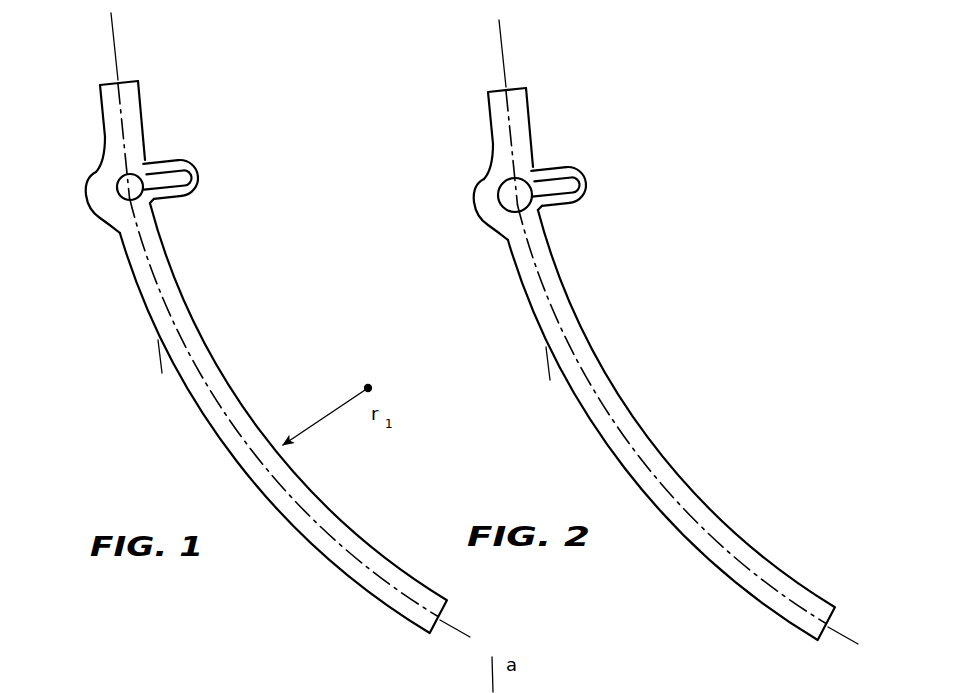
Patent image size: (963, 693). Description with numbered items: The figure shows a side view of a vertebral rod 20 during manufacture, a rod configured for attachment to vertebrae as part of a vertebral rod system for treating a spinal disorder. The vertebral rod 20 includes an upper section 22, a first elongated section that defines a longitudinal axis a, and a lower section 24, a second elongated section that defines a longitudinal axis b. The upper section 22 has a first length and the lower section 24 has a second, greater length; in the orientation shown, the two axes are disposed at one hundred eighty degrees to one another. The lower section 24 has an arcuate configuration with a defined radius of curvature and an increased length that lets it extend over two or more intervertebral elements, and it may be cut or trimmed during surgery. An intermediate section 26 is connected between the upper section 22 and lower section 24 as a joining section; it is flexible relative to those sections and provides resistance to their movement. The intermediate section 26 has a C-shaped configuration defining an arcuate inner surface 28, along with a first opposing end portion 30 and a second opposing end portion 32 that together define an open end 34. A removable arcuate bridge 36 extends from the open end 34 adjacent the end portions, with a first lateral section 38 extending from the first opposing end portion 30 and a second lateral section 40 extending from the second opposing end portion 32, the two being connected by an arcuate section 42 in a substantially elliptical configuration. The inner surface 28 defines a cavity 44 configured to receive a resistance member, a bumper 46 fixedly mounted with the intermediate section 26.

In FIG. 1, the vertebral rod 20 is at (99, 462).
In FIG. 2, the vertebral rod 20 is at (671, 328).
In FIG. 1, the upper section 22 is at (110, 137).
In FIG. 2, the upper section 22 is at (479, 133).
In FIG. 1, the lower section 24 is at (288, 528).
In FIG. 2, the lower section 24 is at (671, 425).
In FIG. 1, the intermediate section 26 is at (108, 208).
In FIG. 2, the intermediate section 26 is at (459, 222).
In FIG. 1, the arcuate inner surface 28 is at (92, 178).
In FIG. 1, the first opposing end portion 30 is at (145, 160).
In FIG. 2, the first opposing end portion 30 is at (546, 127).
In FIG. 1, the second opposing end portion 32 is at (158, 210).
In FIG. 2, the second opposing end portion 32 is at (572, 239).
In FIG. 1, the open end 34 is at (143, 177).
In FIG. 2, the open end 34 is at (480, 185).
In FIG. 1, the arcuate bridge 36 is at (204, 156).
In FIG. 2, the arcuate bridge 36 is at (600, 162).
In FIG. 1, the first lateral section 38 is at (173, 163).
In FIG. 2, the first lateral section 38 is at (585, 137).
In FIG. 1, the second lateral section 40 is at (183, 197).
In FIG. 2, the second lateral section 40 is at (583, 218).
In FIG. 1, the arcuate section 42 is at (202, 177).
In FIG. 2, the arcuate section 42 is at (617, 185).
In FIG. 1, the cavity 44 is at (130, 193).
In FIG. 2, the cavity 44 is at (490, 185).
In FIG. 2, the bumper 46 is at (448, 197).